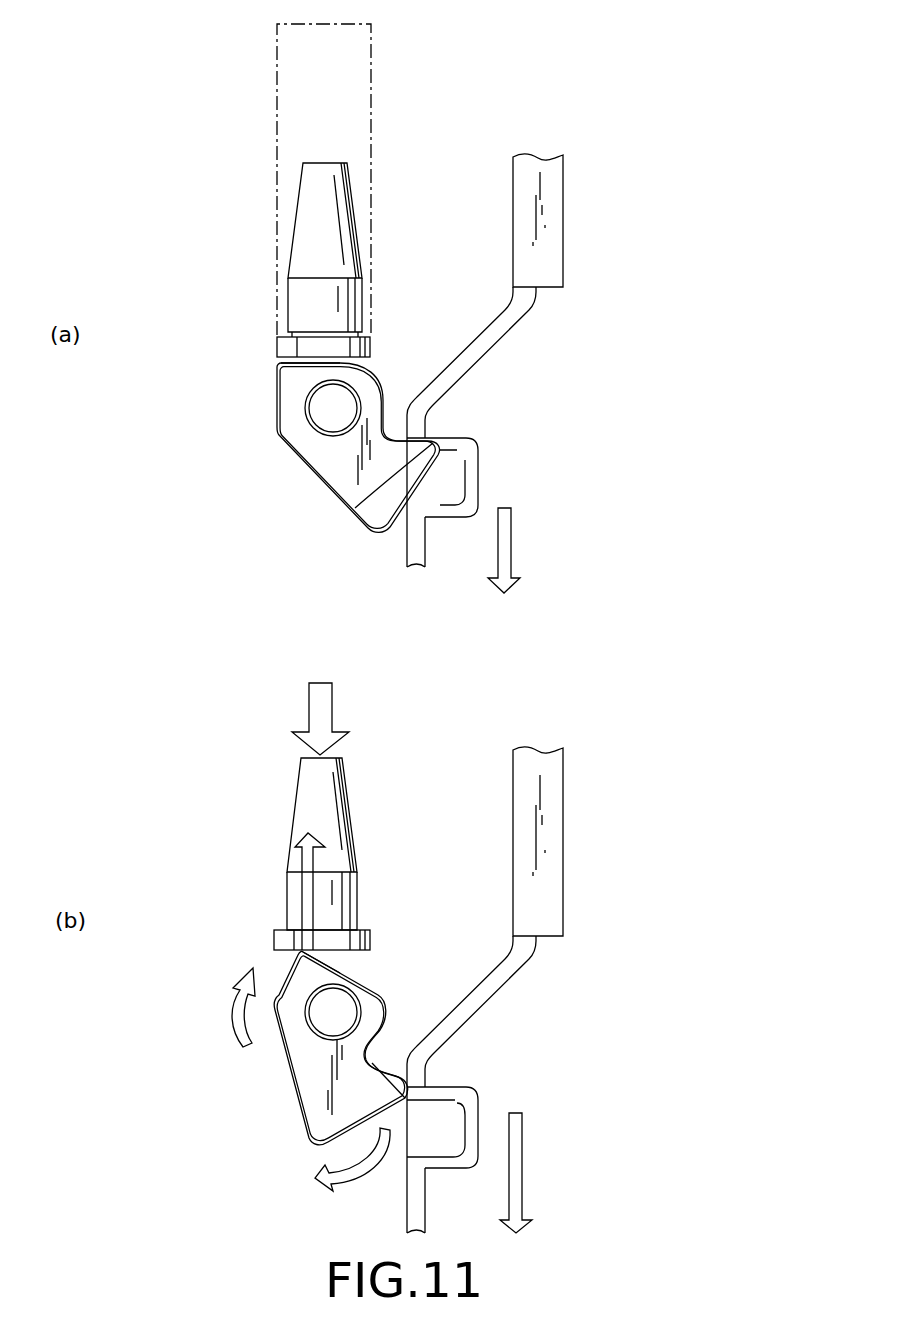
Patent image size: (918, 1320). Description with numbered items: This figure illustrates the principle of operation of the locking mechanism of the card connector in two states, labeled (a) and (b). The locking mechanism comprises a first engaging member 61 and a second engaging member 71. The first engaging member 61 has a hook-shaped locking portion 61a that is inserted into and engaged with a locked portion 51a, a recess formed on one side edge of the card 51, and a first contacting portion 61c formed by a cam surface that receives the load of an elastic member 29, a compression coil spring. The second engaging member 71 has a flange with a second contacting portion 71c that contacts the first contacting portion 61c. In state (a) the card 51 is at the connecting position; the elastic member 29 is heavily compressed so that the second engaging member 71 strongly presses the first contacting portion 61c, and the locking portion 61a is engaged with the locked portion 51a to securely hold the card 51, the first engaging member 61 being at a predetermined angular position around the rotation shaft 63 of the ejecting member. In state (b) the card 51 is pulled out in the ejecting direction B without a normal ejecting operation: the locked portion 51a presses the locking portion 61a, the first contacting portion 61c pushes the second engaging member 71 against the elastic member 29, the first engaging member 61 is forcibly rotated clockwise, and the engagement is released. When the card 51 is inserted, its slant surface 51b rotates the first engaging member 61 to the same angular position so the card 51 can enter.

The elastic member 29 is at (371, 100).
The second engaging member 71 is at (313, 551).
The second contacting portion 71c is at (358, 297).
The card 51 is at (513, 246).
The slant surface 51b is at (457, 362).
The locked portion 51a is at (478, 463).
The first engaging member 61 is at (303, 463).
The locking portion 61a is at (355, 508).
The first contacting portion 61c is at (277, 373).
The rotation shaft 63 is at (320, 412).
The ejecting direction B is at (511, 541).